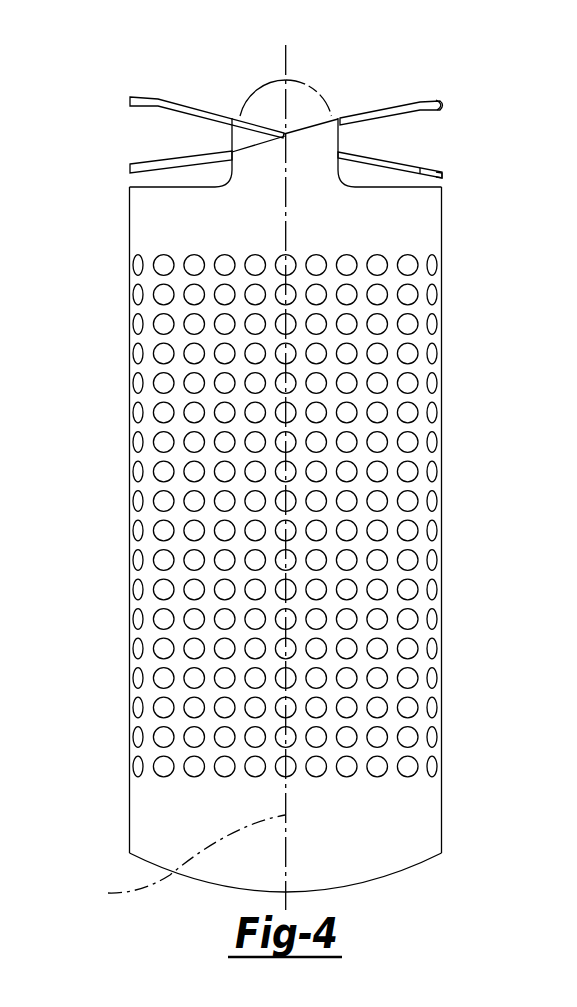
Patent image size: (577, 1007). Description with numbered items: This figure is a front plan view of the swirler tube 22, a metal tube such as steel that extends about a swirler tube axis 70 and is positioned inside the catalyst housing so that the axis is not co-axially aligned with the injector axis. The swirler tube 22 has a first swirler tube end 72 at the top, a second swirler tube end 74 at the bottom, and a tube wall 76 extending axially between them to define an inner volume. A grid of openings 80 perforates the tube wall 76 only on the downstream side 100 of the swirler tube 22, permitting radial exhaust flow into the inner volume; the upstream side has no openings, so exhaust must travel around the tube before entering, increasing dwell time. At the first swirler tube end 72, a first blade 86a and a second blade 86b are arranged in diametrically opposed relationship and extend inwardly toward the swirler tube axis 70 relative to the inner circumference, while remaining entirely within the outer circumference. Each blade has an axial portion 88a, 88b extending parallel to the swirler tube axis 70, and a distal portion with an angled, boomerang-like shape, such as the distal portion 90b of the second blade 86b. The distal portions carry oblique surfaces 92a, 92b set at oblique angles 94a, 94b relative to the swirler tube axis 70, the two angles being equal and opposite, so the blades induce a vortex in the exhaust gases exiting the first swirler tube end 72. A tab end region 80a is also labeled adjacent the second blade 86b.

The swirler tube 22 is at (288, 477).
The swirler tube axis 70 is at (184, 859).
The first swirler tube end 72 is at (307, 182).
The second swirler tube end 74 is at (129, 845).
The tube wall 76 is at (335, 520).
The openings 80 is at (378, 590).
The lower right tab 80a is at (430, 172).
The first blade 86a is at (443, 175).
The second blade 86b is at (443, 101).
The axial portion 88a is at (247, 137).
The axial portion 88b is at (308, 160).
The distal portion 90b is at (421, 102).
The oblique surface 92a is at (143, 108).
The oblique surface 92b is at (148, 173).
The oblique angle 94a is at (248, 97).
The oblique angle 94b is at (331, 95).
The downstream side 100 is at (275, 859).